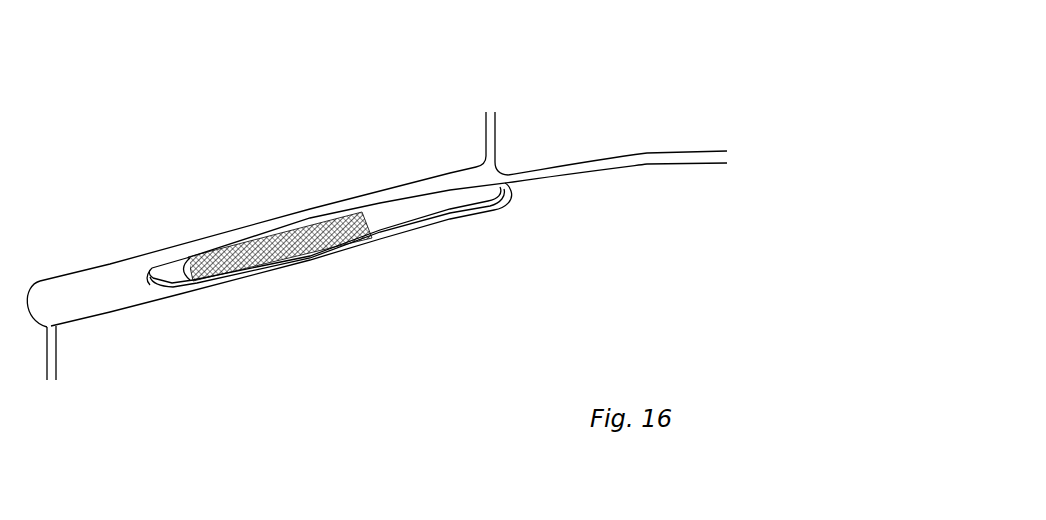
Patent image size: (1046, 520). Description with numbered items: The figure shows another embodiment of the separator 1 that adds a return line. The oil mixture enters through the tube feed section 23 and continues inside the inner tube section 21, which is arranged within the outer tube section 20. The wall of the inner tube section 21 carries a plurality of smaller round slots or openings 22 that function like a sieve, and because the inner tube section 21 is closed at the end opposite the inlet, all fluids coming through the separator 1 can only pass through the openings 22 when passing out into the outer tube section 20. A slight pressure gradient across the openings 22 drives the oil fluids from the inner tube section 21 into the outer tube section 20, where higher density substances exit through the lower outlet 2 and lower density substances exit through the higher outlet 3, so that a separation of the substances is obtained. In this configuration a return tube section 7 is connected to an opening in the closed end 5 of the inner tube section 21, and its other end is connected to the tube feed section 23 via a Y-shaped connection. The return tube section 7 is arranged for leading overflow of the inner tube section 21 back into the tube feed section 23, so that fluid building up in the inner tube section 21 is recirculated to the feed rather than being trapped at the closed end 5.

The separator 1 is at (442, 95).
The lower outlet 2 is at (57, 353).
The higher outlet 3 is at (496, 123).
The closed end of the inner tube section 5 is at (150, 270).
The return tube section 7 is at (465, 213).
The outer tube section 20 is at (143, 303).
The inner tube section 21 is at (262, 230).
The openings 22 is at (228, 247).
The tube feed section 23 is at (620, 153).